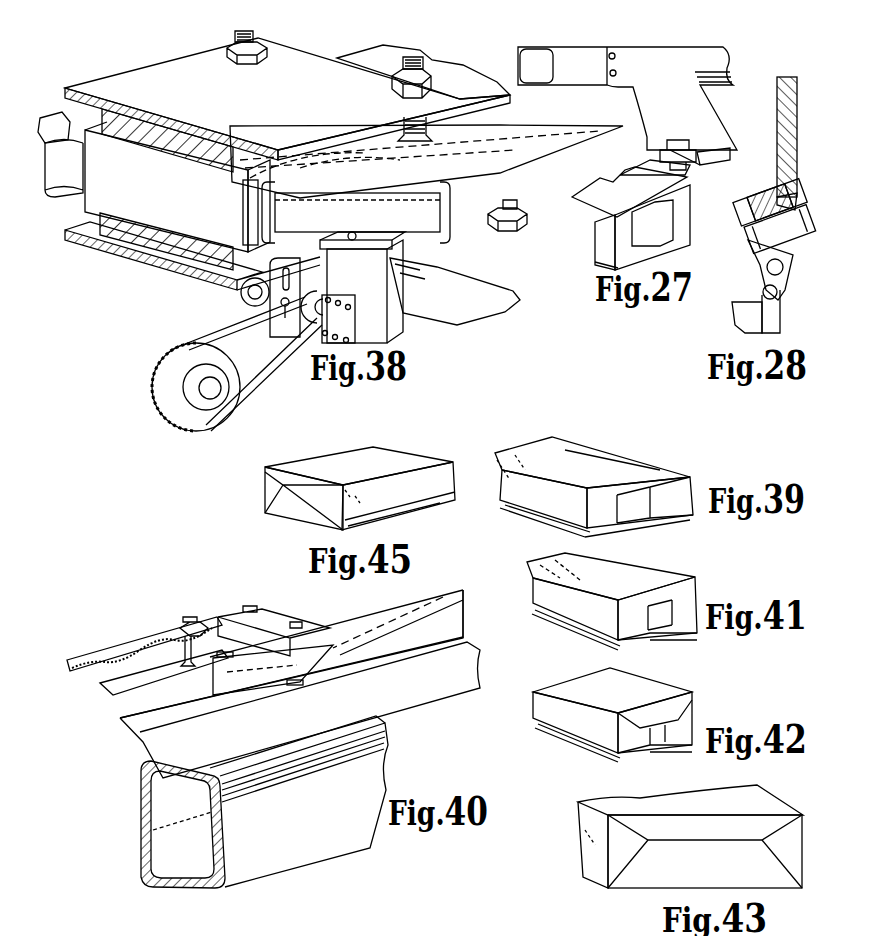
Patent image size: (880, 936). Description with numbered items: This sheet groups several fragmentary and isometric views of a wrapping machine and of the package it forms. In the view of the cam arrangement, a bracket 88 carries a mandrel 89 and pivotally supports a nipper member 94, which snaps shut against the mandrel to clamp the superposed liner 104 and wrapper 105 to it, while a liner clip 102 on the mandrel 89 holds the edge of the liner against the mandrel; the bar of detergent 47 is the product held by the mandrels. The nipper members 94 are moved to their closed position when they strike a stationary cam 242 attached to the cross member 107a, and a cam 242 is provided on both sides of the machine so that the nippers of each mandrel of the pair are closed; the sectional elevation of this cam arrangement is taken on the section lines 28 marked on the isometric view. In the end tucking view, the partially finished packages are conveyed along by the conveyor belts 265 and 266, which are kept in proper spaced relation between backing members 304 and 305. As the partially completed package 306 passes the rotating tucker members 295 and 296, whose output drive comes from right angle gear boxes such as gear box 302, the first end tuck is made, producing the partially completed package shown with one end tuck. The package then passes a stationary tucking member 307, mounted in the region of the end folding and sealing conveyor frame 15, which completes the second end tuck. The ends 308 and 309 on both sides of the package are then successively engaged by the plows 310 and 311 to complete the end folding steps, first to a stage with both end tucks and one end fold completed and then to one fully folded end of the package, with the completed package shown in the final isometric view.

In FIG. 40, the end folding and sealing conveyor frame 15 is at (264, 802).
In FIG. 27, the section lines 28— 28 is at (694, 217).
In FIG. 27, the bar of detergent 47 is at (642, 227).
In FIG. 28, the bracket 88 is at (780, 323).
In FIG. 27, the mandrel 89 is at (596, 270).
In FIG. 28, the mandrel 89 is at (732, 310).
In FIG. 28, the nipper member 94 is at (758, 262).
In FIG. 27, the liner clip 102 is at (672, 178).
In FIG. 45, the liner 104 is at (412, 510).
In FIG. 39, the liner 104 is at (548, 520).
In FIG. 41, the liner 104 is at (578, 633).
In FIG. 42, the liner 104 is at (575, 745).
In FIG. 27, the wrapper 105 is at (629, 192).
In FIG. 45, the wrapper 105 is at (417, 478).
In FIG. 39, the wrapper 105 is at (583, 457).
In FIG. 41, the wrapper 105 is at (628, 570).
In FIG. 42, the wrapper 105 is at (612, 710).
In FIG. 43, the wrapper 105 is at (758, 805).
In FIG. 27, the cross member 107a is at (578, 45).
In FIG. 27, the stationary cam 242 is at (730, 157).
In FIG. 28, the stationary cam 242 is at (795, 238).
In FIG. 38, the conveyor belt 265 is at (117, 100).
In FIG. 38, the conveyor belt 266 is at (128, 240).
In FIG. 40, the conveyor belt 266 is at (300, 707).
In FIG. 38, the rotating tucker member 295 is at (356, 212).
In FIG. 38, the rotating tucker member 296 is at (58, 112).
In FIG. 38, the right angle gear box 302 is at (362, 287).
In FIG. 38, the backing member 304 is at (152, 118).
In FIG. 38, the backing member 305 is at (180, 250).
In FIG. 38, the partially completed package 306 is at (177, 187).
In FIG. 38, the stationary tucking member 307 is at (426, 161).
In FIG. 40, the stationary tucking member 307 is at (125, 703).
In FIG. 41, the package end 308 is at (683, 585).
In FIG. 42, the package end 308 is at (655, 722).
In FIG. 43, the package end 308 is at (705, 851).
In FIG. 41, the package end 309 is at (692, 642).
In FIG. 42, the package end 309 is at (678, 755).
In FIG. 43, the package end 309 is at (705, 851).
In FIG. 40, the plow 310 is at (353, 628).
In FIG. 40, the plow 311 is at (452, 623).